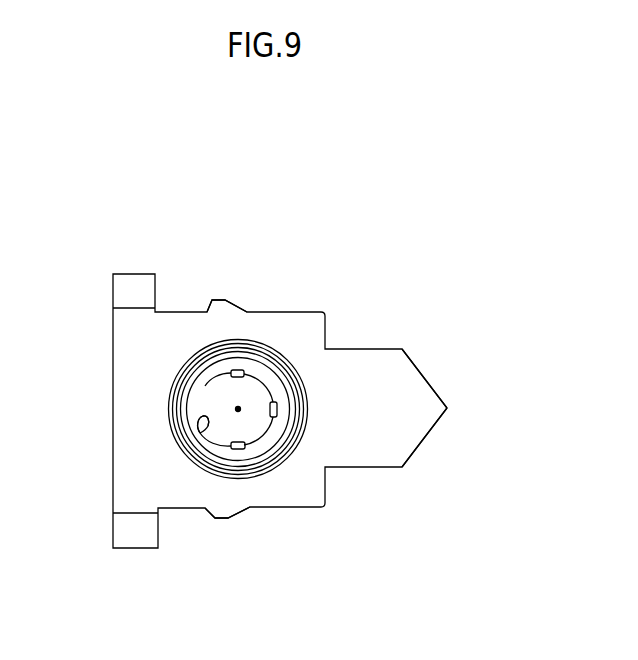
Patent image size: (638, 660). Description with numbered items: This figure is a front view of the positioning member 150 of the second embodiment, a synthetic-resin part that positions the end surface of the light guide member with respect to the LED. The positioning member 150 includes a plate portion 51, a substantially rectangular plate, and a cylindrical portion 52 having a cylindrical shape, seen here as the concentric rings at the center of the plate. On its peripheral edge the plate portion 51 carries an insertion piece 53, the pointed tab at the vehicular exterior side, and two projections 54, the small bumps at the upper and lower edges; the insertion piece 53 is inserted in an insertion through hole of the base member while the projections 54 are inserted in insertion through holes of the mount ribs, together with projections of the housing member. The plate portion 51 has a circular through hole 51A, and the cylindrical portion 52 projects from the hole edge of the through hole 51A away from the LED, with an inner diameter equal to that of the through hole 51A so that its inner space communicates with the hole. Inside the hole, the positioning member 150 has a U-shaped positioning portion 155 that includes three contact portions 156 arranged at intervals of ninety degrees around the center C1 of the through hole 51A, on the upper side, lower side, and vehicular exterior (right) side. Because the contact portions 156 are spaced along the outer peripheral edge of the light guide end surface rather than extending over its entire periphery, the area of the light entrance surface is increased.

The positioning member 150 is at (97, 445).
The plate portion 51 is at (121, 343).
The circular through hole 51A is at (200, 433).
The cylindrical portion 52 is at (293, 407).
The insertion piece 53 is at (413, 433).
The projection 54 is at (221, 305).
The positioning portion 155 is at (205, 386).
The contact portion 156 is at (239, 442).
The center C1 is at (238, 409).